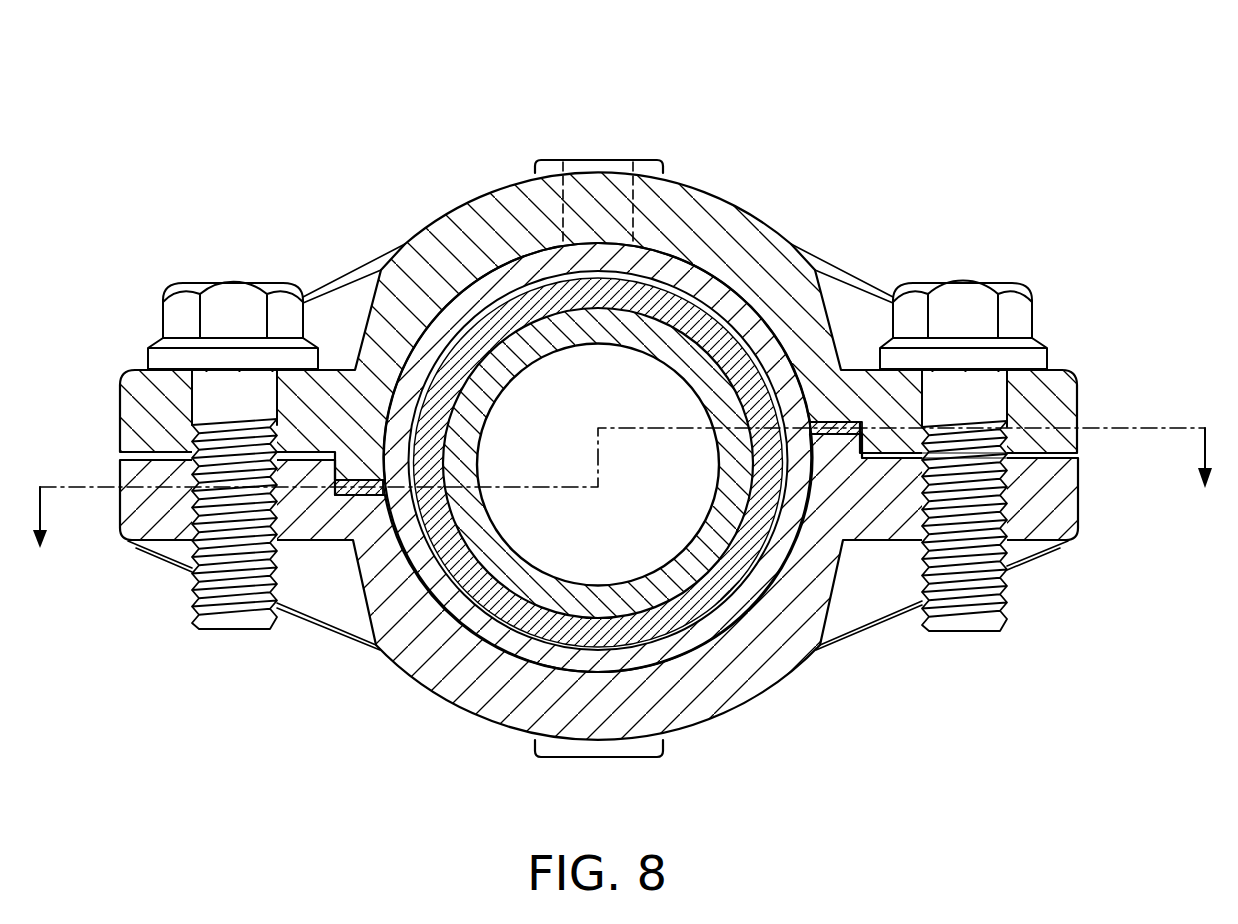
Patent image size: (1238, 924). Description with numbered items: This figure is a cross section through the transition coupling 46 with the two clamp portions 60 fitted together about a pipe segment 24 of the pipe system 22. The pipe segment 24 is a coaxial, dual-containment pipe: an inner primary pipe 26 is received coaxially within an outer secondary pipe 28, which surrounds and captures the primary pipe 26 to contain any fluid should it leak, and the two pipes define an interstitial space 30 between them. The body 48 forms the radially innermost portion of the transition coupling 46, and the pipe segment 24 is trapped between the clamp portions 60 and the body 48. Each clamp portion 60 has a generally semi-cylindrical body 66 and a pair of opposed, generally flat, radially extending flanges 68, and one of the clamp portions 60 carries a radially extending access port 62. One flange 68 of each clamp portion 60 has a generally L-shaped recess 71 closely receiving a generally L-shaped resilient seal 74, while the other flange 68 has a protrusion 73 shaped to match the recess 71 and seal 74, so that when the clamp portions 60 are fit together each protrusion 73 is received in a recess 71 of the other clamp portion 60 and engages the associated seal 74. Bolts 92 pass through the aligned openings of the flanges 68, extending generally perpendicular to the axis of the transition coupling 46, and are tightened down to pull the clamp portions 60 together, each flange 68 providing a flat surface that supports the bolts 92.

The transition coupling 46 is at (741, 128).
The access port 62 is at (657, 165).
The interstitial space 30 is at (527, 288).
The pipe system 22 is at (652, 262).
The pipe segment 24 is at (687, 275).
The secondary pipe 28 is at (727, 302).
The primary pipe 26 is at (505, 320).
The semi-cylindrical body 66 is at (413, 300).
The clamp portion 60 is at (331, 308).
The bolt 92 is at (178, 311).
The protrusion 73 is at (363, 467).
The seal 74 is at (385, 480).
The body 48 is at (729, 438).
The recess 71 is at (838, 422).
The flange 68 is at (1073, 418).